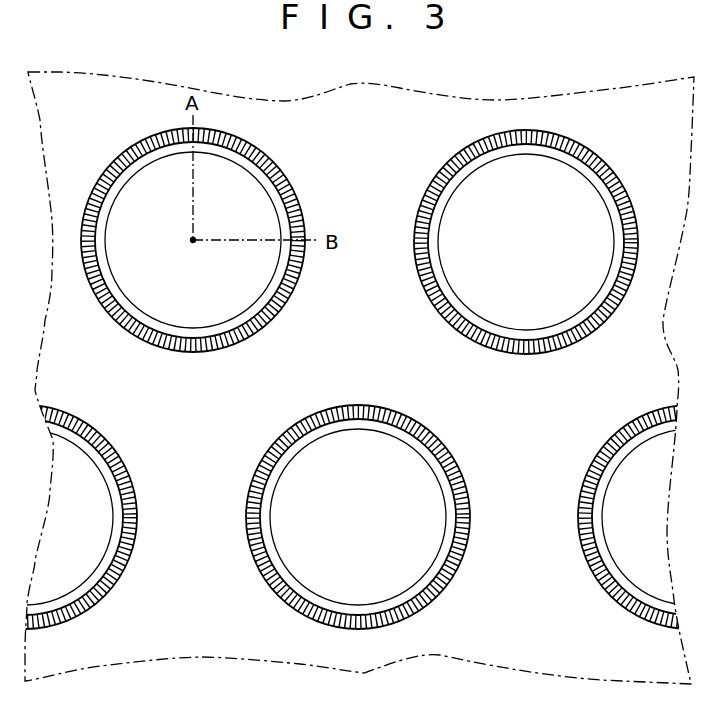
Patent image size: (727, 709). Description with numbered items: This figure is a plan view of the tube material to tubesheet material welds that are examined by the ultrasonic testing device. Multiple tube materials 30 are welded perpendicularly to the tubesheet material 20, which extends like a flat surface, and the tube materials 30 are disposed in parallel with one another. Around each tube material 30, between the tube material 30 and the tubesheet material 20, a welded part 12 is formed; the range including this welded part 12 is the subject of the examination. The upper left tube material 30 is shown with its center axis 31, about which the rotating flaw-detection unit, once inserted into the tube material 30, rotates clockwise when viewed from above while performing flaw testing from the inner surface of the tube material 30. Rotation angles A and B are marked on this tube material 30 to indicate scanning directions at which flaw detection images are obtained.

The welded part 12 is at (135, 342).
The tubesheet material 20 is at (373, 349).
The tube material 30 is at (125, 305).
The center axis 31 is at (195, 244).